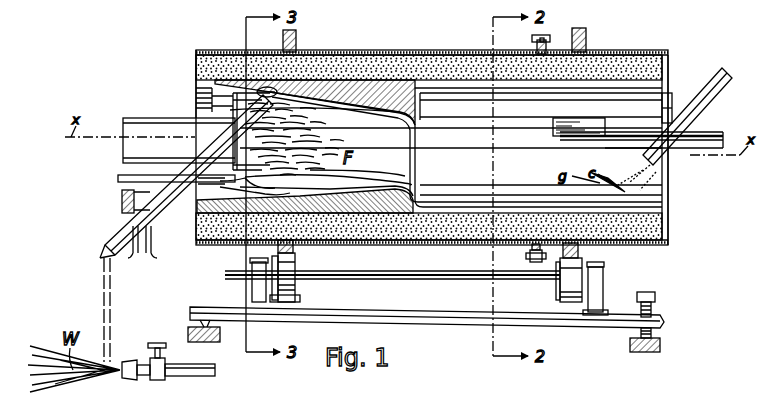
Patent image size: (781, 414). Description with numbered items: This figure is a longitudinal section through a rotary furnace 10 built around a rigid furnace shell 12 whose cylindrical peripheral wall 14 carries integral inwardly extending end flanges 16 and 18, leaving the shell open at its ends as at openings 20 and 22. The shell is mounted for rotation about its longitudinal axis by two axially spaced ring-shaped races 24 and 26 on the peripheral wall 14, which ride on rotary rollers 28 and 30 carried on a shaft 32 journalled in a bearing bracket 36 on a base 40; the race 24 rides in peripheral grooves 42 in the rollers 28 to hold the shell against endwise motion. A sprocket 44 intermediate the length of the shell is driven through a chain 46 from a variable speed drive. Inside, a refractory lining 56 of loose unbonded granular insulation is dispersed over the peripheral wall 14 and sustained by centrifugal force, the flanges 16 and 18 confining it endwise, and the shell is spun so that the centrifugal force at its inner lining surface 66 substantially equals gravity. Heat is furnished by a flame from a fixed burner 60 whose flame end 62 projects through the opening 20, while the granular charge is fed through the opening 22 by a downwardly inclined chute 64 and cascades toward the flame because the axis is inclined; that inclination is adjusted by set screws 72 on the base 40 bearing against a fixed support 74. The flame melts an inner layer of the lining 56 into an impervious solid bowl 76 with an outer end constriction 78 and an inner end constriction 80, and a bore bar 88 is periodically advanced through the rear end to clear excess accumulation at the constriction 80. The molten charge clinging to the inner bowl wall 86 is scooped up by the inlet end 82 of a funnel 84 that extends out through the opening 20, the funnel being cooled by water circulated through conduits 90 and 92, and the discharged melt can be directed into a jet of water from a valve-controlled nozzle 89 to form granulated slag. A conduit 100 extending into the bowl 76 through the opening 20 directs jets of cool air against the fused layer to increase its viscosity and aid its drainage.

The rotary furnace 10 is at (617, 50).
The furnace shell 12 is at (433, 52).
The peripheral wall 14 is at (365, 52).
The end flange 16 is at (194, 70).
The end flange 18 is at (668, 84).
The opening 20 is at (205, 103).
The opening 22 is at (672, 112).
The ring-shaped race 24 is at (297, 45).
The ring-shaped race 26 is at (586, 47).
The rotary roller 28 is at (296, 266).
The rotary roller 30 is at (583, 268).
The shaft 32 is at (352, 282).
The bearing bracket 36 is at (252, 281).
The base 40 is at (515, 322).
The peripheral groove 42 is at (298, 298).
The sprocket 44 is at (536, 44).
The chain 46 is at (549, 44).
The refractory lining 56 is at (405, 76).
The burner 60 is at (160, 122).
The flame end 62 is at (259, 185).
The chute 64 is at (728, 83).
The inner lining surface 66 is at (446, 141).
The set screw 72 is at (656, 298).
The fixed support 74 is at (207, 342).
The solid bowl 76 is at (362, 230).
The outer end constriction 78 is at (210, 95).
The inner end constriction 80 is at (418, 118).
The inlet end 82 is at (295, 129).
The funnel 84 is at (200, 150).
The inner bowl wall 86 is at (272, 262).
The bore bar 88 is at (592, 140).
The valve-controlled nozzle 89 is at (131, 380).
The conduit 90 is at (133, 254).
The conduit 92 is at (152, 254).
The conduit 100 is at (212, 192).